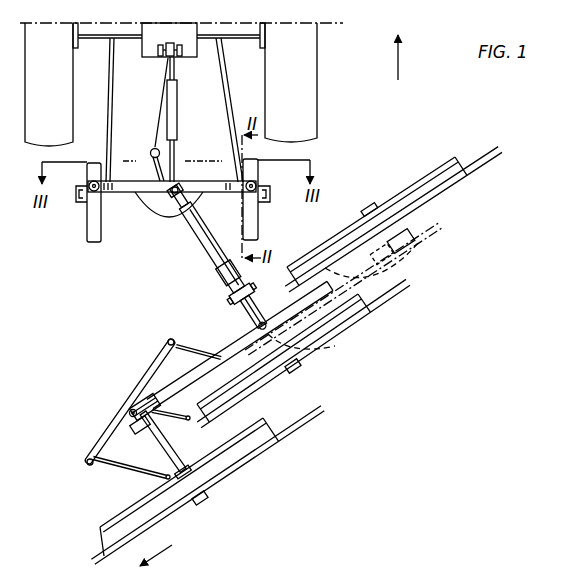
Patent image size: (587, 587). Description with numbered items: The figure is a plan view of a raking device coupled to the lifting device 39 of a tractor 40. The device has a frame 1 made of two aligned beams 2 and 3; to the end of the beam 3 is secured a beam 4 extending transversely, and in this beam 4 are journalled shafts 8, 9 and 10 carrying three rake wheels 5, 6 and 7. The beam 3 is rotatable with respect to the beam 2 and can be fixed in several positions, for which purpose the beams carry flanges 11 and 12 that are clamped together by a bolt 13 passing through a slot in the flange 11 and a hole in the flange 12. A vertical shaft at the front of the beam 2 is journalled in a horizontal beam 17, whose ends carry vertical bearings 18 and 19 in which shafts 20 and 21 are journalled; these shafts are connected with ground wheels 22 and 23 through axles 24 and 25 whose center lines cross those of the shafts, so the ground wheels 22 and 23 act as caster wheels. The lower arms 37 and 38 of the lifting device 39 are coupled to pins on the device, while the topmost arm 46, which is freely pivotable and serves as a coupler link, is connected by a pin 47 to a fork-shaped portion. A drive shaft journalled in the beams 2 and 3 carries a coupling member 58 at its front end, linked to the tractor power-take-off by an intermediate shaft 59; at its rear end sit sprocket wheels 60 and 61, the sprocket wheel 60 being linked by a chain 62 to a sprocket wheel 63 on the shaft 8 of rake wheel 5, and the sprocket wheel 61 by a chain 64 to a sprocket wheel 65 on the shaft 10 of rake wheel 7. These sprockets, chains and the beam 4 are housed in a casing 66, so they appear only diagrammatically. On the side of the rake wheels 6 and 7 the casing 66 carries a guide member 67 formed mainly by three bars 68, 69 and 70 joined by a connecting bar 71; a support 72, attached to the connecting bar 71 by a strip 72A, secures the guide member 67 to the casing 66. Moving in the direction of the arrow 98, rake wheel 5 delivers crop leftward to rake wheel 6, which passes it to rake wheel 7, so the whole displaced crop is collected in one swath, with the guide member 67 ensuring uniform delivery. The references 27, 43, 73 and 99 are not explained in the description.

The frame 1 is at (224, 258).
The beam 2 is at (208, 236).
The beam 3 is at (245, 308).
The beam 4 is at (262, 345).
The rake wheel 5 is at (448, 162).
The rake wheel 6 is at (379, 306).
The rake wheel 7 is at (262, 448).
The shaft 8 is at (397, 232).
The shaft 9 is at (300, 366).
The shaft 10 is at (173, 455).
The flange 11 is at (250, 279).
The flange 12 is at (251, 292).
The bolt 13 is at (223, 287).
The horizontal beam 17 is at (212, 180).
The vertical bearing 18 is at (73, 194).
The vertical bearing 19 is at (257, 183).
The shaft 20 is at (88, 185).
The shaft 21 is at (265, 190).
The ground wheel 22 is at (92, 228).
The ground wheel 23 is at (258, 228).
The axle 24 is at (78, 203).
The axle 25 is at (268, 202).
The guide arc 27 is at (148, 205).
The lower arm 37 is at (110, 83).
The lower arm 38 is at (228, 90).
The lifting device 39 is at (207, 81).
The tractor 40 is at (316, 37).
The cylinder yoke 43 is at (197, 228).
The topmost arm 46 is at (175, 118).
The pin 47 is at (182, 180).
The coupling member 58 is at (150, 152).
The intermediate shaft 59 is at (163, 100).
The sprocket wheel 60 is at (258, 328).
The sprocket wheel 61 is at (313, 344).
The chain 62 is at (416, 258).
The sprocket wheel 63 is at (420, 244).
The chain 64 is at (254, 384).
The sprocket wheel 65 is at (141, 434).
The casing 66 is at (215, 357).
The guide member 67 is at (152, 351).
The bar 68 is at (196, 344).
The bar 69 is at (141, 398).
The bar 70 is at (100, 464).
The connecting bar 71 is at (167, 338).
The support 72 is at (153, 402).
The strip 72A is at (130, 410).
The lower rod 73 is at (163, 480).
The arrow 98 is at (400, 64).
The direction arrow 99 is at (165, 549).